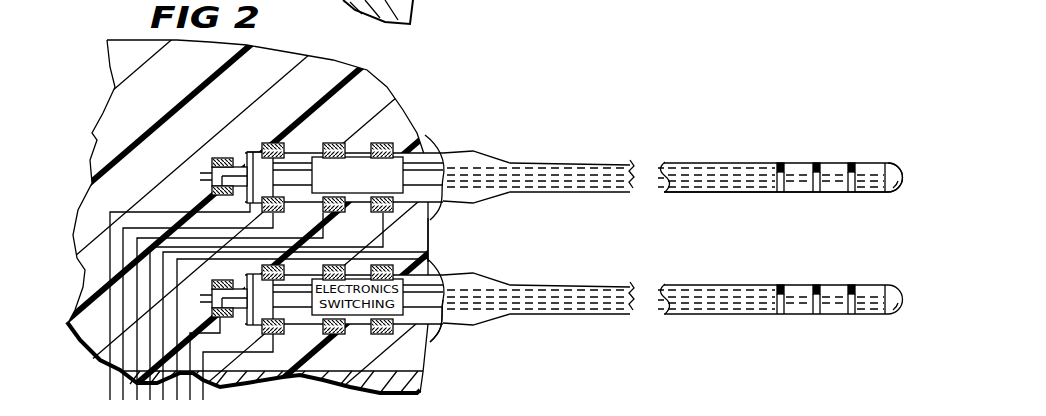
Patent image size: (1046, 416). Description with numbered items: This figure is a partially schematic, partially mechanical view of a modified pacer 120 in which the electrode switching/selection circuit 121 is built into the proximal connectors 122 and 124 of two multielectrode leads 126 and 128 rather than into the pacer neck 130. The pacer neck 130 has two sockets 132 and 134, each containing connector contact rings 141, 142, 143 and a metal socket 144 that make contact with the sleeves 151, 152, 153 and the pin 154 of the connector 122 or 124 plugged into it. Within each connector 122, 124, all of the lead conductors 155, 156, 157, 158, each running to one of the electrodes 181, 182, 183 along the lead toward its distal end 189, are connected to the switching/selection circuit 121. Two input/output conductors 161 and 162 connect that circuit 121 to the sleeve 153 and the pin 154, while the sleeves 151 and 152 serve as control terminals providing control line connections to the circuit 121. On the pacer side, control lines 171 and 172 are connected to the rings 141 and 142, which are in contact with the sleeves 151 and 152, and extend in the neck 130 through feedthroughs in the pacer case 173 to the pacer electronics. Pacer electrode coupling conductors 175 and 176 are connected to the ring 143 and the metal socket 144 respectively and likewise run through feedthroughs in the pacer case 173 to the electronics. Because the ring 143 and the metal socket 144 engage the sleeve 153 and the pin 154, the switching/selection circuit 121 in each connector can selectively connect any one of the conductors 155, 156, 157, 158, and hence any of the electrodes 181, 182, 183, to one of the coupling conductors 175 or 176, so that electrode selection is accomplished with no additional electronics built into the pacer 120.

The pacer 120 is at (361, 163).
The electrode switching/selection circuit 121 is at (417, 150).
The proximal connector 122 is at (433, 150).
The proximal connector 124 is at (472, 278).
The multielectrode lead 126 is at (804, 188).
The multielectrode lead 128 is at (781, 328).
The pacer neck 130 is at (389, 100).
The socket 132 is at (433, 202).
The socket 134 is at (417, 320).
The connector contact ring 141 is at (388, 148).
The connector contact ring 142 is at (337, 146).
The connector contact ring 143 is at (273, 142).
The metal socket 144 is at (248, 157).
The sleeve 151 is at (473, 155).
The sleeve 152 is at (268, 212).
The sleeve 153 is at (214, 196).
The pin 154 is at (212, 168).
The lead conductor 155 is at (567, 170).
The lead conductor 156 is at (716, 140).
The lead conductor 157 is at (612, 180).
The lead conductor 158 is at (687, 187).
The input/output conductor 161 is at (248, 140).
The input/output conductor 162 is at (308, 153).
The control line 171 is at (429, 238).
The control line 172 is at (334, 213).
The pacer case 173 is at (397, 383).
The pacer electrode coupling conductor 175 is at (108, 212).
The pacer electrode coupling conductor 176 is at (147, 196).
The electrode 181 is at (782, 163).
The electrode 182 is at (817, 163).
The electrode 183 is at (852, 163).
The rounded tip 189 is at (898, 172).